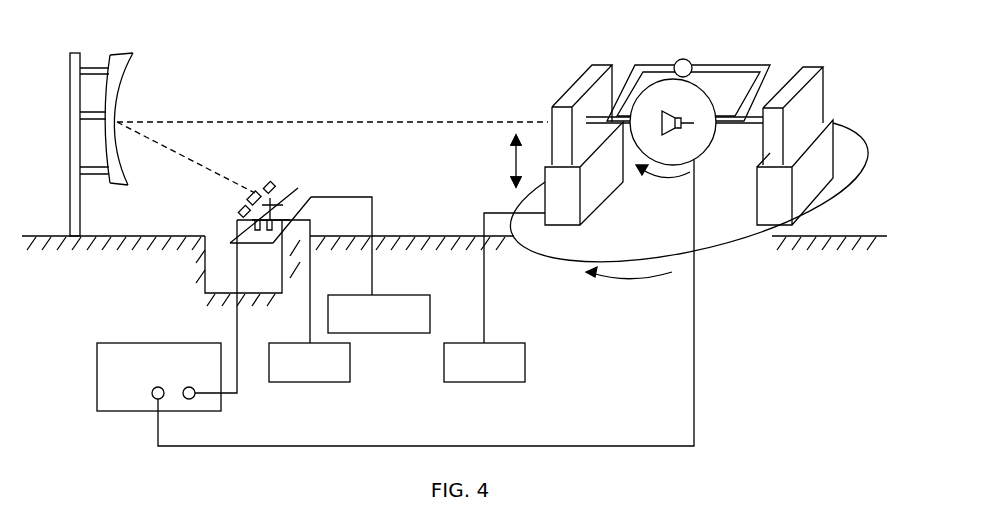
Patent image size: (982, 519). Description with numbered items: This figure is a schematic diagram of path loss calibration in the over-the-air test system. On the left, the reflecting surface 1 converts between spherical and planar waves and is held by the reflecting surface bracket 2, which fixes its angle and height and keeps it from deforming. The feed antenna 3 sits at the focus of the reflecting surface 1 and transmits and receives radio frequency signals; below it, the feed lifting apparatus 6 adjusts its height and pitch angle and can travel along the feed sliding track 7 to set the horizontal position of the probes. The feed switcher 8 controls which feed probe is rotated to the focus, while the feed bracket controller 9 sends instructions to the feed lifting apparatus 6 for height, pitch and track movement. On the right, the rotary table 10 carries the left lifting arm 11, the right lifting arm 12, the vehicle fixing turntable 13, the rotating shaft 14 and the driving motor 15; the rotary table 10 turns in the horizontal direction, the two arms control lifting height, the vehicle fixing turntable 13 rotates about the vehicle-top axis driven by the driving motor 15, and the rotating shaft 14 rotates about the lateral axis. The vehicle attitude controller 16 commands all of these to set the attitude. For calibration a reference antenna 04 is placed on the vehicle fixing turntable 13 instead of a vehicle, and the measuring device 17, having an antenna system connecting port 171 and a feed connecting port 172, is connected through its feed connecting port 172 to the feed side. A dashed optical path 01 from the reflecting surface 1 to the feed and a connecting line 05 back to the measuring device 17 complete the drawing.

The reflecting surface 1 is at (120, 80).
The reflecting surface bracket 2 is at (70, 128).
The feed antenna 3 is at (258, 191).
The feed lifting apparatus 6 is at (275, 205).
The feed sliding track 7 is at (312, 193).
The feed switcher 8 is at (379, 314).
The feed bracket controller 9 is at (293, 301).
The rotary table 10 is at (708, 250).
The left lifting arm 11 is at (568, 90).
The right lifting arm 12 is at (823, 80).
The vehicle fixing turntable 13 is at (715, 76).
The rotating shaft 14 is at (757, 126).
The driving motor 15 is at (684, 59).
The vehicle attitude controller 16 is at (494, 297).
The measuring device 17 is at (159, 377).
The antenna system connecting port 171 is at (190, 399).
The feed connecting port 172 is at (154, 398).
The optical axis 01 is at (382, 101).
The reference antenna 04 is at (662, 114).
The connecting cable 05 is at (592, 446).